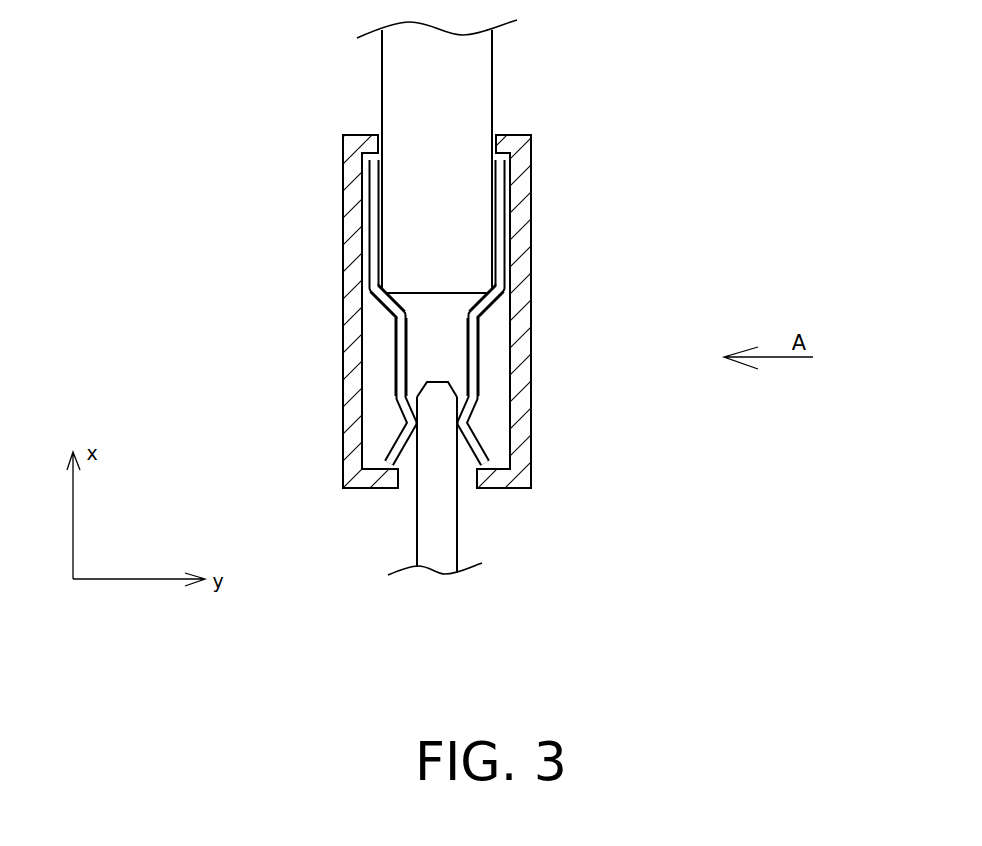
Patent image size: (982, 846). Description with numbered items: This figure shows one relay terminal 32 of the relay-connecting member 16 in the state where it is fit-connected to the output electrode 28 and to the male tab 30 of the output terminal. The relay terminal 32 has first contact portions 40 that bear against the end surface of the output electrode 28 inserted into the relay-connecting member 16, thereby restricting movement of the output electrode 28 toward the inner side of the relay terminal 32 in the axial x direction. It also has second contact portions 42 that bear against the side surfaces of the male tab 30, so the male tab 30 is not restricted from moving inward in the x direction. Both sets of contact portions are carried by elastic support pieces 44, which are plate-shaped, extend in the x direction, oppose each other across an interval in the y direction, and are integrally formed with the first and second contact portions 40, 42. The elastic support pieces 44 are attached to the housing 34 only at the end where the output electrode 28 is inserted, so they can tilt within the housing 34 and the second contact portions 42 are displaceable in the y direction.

The relay-connecting member 16 is at (655, 509).
The output electrode 28 is at (493, 80).
The male tab 30 is at (457, 522).
The relay terminal 32 is at (483, 337).
The housing 34 is at (343, 237).
The first contact portions 40 is at (383, 295).
The second contact portions 42 is at (416, 418).
The elastic support pieces 44 is at (395, 362).